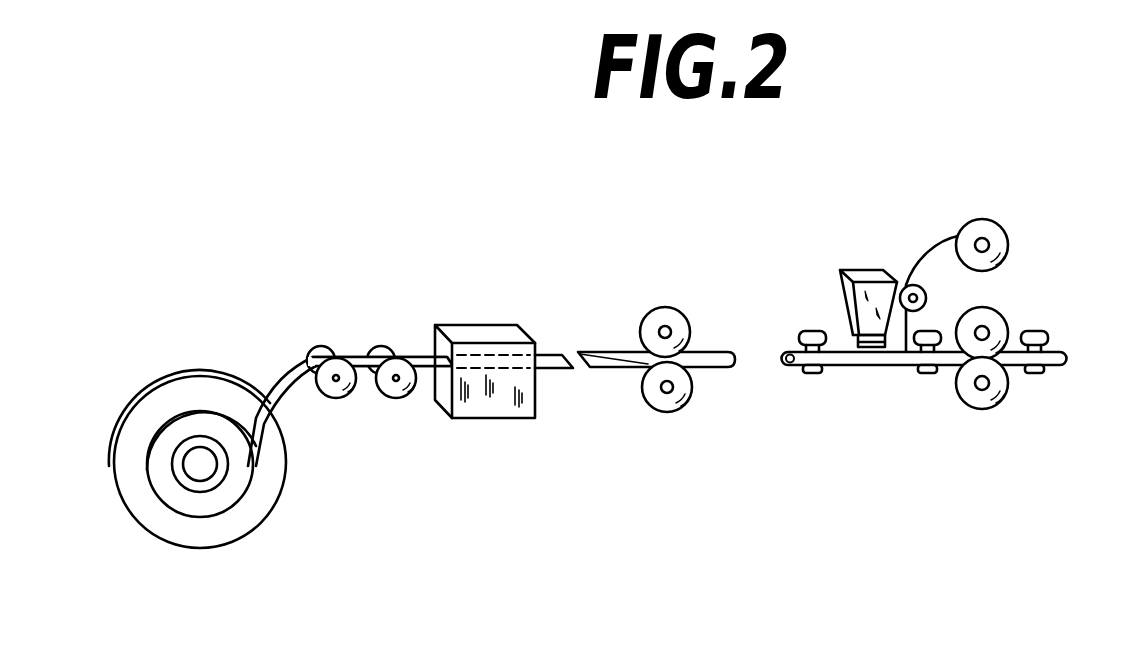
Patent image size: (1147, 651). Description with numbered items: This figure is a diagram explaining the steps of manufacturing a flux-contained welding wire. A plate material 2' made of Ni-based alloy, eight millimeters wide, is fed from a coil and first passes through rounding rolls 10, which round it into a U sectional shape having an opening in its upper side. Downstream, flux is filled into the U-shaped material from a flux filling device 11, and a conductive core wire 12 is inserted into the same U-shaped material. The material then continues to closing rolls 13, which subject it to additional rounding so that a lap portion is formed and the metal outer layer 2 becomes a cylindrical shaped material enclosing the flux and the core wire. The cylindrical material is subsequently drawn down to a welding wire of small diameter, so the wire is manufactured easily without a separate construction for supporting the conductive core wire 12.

The plate material 2' is at (281, 393).
The metal outer layer 2 is at (928, 408).
The rounding rolls 10 is at (642, 307).
The flux filling device 11 is at (830, 293).
The conductive core wire 12 is at (922, 252).
The closing rolls 13 is at (1005, 300).